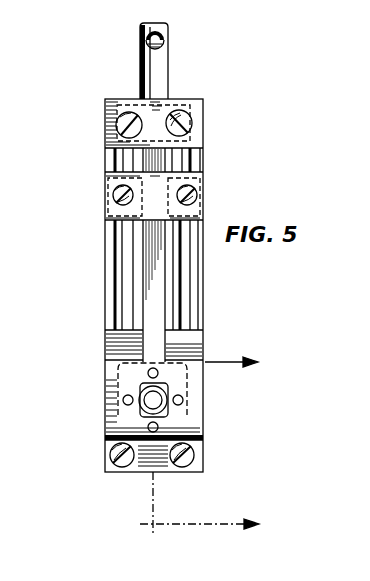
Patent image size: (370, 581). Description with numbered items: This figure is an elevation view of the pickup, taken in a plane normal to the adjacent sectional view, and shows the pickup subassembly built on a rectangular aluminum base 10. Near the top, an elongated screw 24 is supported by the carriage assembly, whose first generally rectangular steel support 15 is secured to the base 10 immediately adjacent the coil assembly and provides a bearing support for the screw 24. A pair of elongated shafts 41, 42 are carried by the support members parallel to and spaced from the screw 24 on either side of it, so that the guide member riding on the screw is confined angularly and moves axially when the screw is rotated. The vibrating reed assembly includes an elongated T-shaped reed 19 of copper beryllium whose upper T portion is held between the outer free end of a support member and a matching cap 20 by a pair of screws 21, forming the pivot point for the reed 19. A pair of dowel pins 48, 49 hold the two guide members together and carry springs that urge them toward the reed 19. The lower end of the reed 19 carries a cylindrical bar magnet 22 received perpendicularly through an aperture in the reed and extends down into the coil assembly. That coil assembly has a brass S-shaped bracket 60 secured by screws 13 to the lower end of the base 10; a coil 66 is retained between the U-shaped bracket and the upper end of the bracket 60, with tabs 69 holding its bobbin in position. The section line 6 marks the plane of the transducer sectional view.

The section line 6— 6 is at (207, 445).
The rectangular aluminum base 10 is at (105, 312).
The screws 13 is at (192, 457).
The first generally rectangular steel support 15 is at (192, 350).
The elongated T-shaped reed 19 is at (143, 243).
The cap 20 is at (200, 142).
The screws 21 is at (199, 118).
The cylindrical bar magnet 22 is at (160, 405).
The elongated screw 24 is at (162, 53).
The elongated shaft 41 is at (122, 283).
The elongated shaft 42 is at (188, 312).
The dowel pin 48 is at (110, 199).
The dowel pin 49 is at (200, 196).
The S-shaped bracket 60 is at (139, 399).
The coil 66 is at (118, 366).
The tabs 69 is at (182, 400).